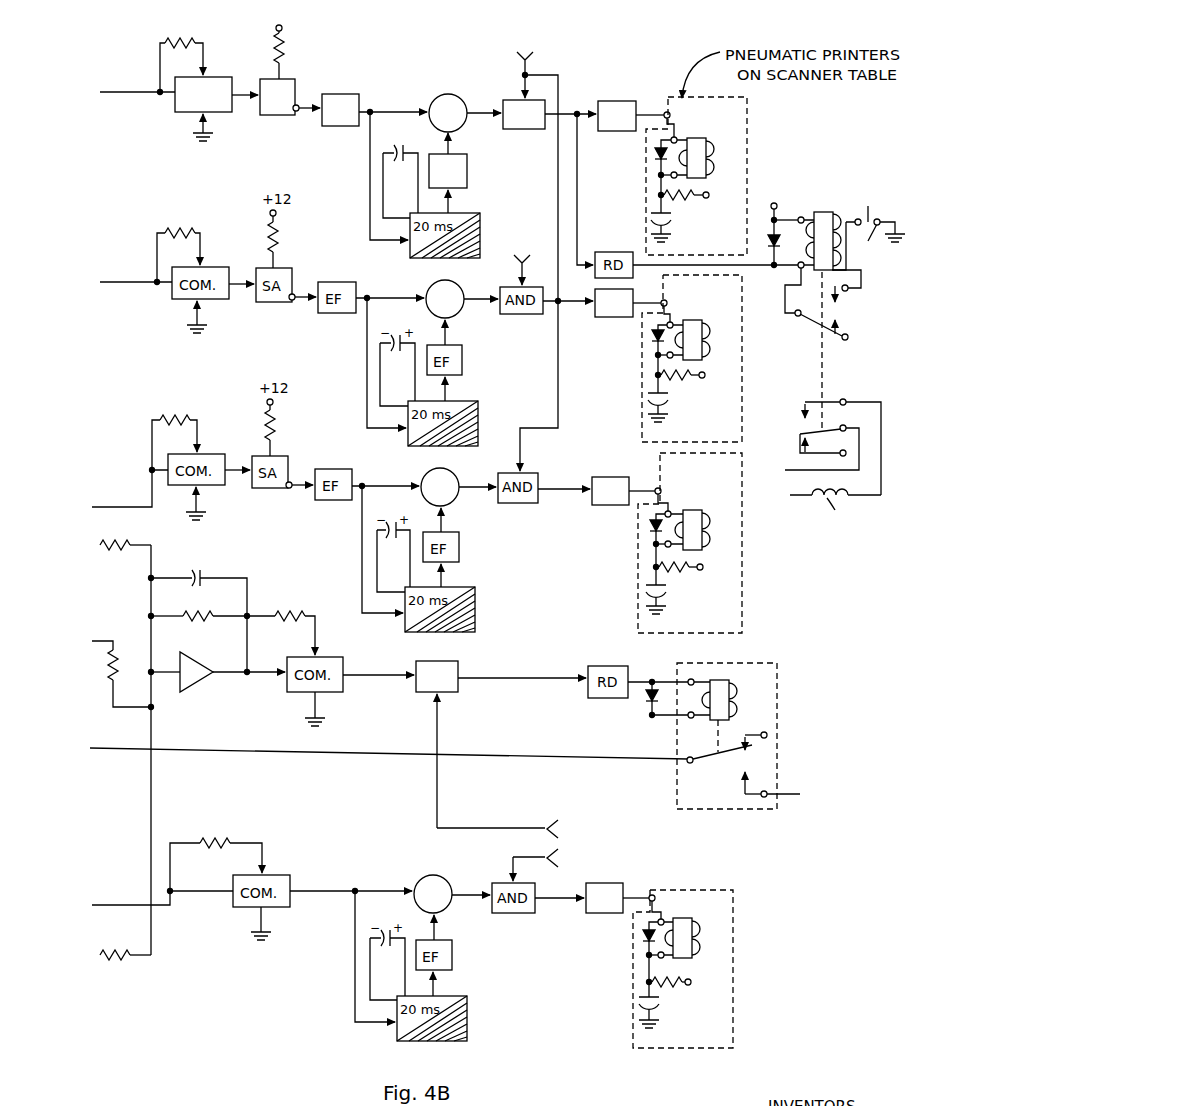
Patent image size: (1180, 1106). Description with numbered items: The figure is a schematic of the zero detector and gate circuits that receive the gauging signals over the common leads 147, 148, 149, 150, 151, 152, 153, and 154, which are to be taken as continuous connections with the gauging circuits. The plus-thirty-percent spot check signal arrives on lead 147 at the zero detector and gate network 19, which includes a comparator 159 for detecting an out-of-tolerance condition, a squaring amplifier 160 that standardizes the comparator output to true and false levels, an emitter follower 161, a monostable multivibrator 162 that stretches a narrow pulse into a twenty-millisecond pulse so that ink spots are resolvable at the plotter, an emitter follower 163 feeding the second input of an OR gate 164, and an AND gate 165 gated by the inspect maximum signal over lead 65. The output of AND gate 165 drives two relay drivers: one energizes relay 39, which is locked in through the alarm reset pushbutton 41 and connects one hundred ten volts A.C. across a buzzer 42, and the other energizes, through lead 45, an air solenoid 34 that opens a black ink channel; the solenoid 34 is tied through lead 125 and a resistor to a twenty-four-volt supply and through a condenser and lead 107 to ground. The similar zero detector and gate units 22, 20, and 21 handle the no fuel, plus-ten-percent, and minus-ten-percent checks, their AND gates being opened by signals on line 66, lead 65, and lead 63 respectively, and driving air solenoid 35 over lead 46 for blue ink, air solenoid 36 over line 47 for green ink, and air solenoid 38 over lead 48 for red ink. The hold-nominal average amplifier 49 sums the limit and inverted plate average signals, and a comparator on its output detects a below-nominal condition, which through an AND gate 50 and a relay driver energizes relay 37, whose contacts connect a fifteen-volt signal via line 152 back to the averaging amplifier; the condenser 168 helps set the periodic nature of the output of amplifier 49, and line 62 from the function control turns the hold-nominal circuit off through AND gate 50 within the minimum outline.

The common lead 147 is at (105, 92).
The common lead 148 is at (105, 282).
The common lead 149 is at (100, 507).
The common lead 150 is at (96, 548).
The common lead 151 is at (95, 641).
The line 152 is at (98, 752).
The common lead 153 is at (96, 905).
The common lead 154 is at (96, 960).
The comparator 159 is at (222, 112).
The squaring amplifier 160 is at (295, 81).
The emitter follower 161 is at (340, 126).
The monostable multivibrator 162 is at (470, 213).
The emitter follower 163 is at (467, 168).
The OR gate 164 is at (453, 95).
The AND gate 165 is at (522, 129).
The zero detector and gate network 19 is at (397, 72).
The zero detector AND gate unit 20 is at (394, 474).
The zero detector and gate network 21 is at (402, 879).
The zero detector and gate unit 22 is at (400, 284).
The lead 65 is at (523, 66).
The line 66 is at (519, 272).
The line 62 is at (508, 826).
The lead 63 is at (539, 856).
The lead 45 is at (661, 113).
The lead 46 is at (640, 308).
The line 47 is at (652, 488).
The lead 48 is at (640, 896).
The AND gate 50 is at (460, 666).
The air solenoid 34 is at (692, 138).
The air solenoid 35 is at (702, 323).
The air solenoid 36 is at (700, 511).
The relay 37 is at (729, 684).
The air solenoid 38 is at (691, 941).
The relay 39 is at (828, 213).
The alarm reset pushbutton 41 is at (869, 230).
The buzzer 42 is at (848, 498).
The hold-nominal average amplifier 49 is at (185, 685).
The lead 107 is at (673, 230).
The lead 125 is at (672, 200).
The condenser 168 is at (203, 572).